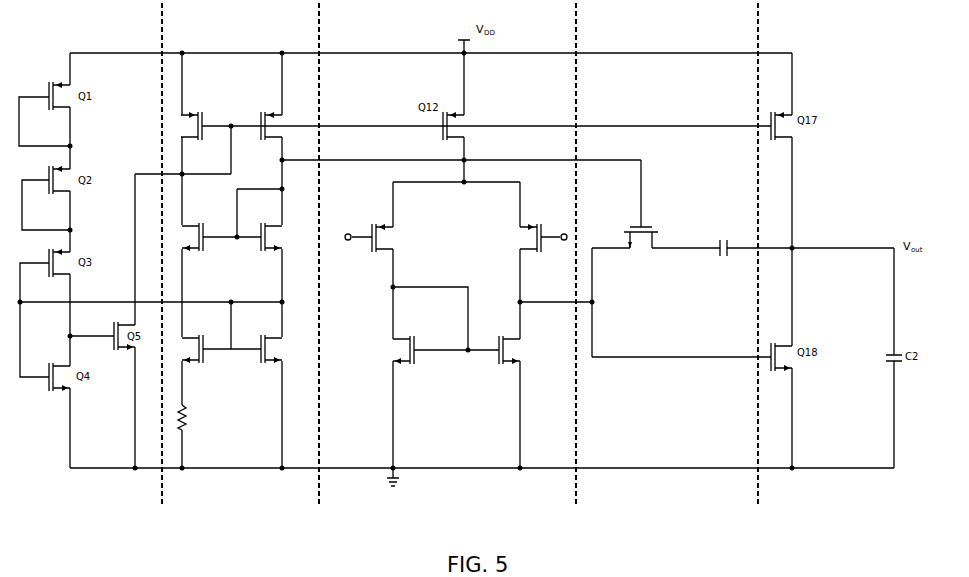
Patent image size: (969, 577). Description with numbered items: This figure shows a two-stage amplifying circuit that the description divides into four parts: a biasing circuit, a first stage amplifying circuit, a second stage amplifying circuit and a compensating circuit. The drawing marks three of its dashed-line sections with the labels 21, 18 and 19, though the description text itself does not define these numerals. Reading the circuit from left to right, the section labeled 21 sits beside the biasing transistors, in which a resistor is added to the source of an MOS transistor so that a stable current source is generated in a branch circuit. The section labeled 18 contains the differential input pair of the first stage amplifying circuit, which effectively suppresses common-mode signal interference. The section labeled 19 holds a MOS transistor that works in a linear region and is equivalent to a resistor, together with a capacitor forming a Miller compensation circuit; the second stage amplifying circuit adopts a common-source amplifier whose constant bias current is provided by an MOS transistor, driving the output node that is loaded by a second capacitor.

The bias circuit 21 is at (232, 285).
The differential input stage 18 is at (462, 350).
The output / compensation stage 19 is at (681, 339).